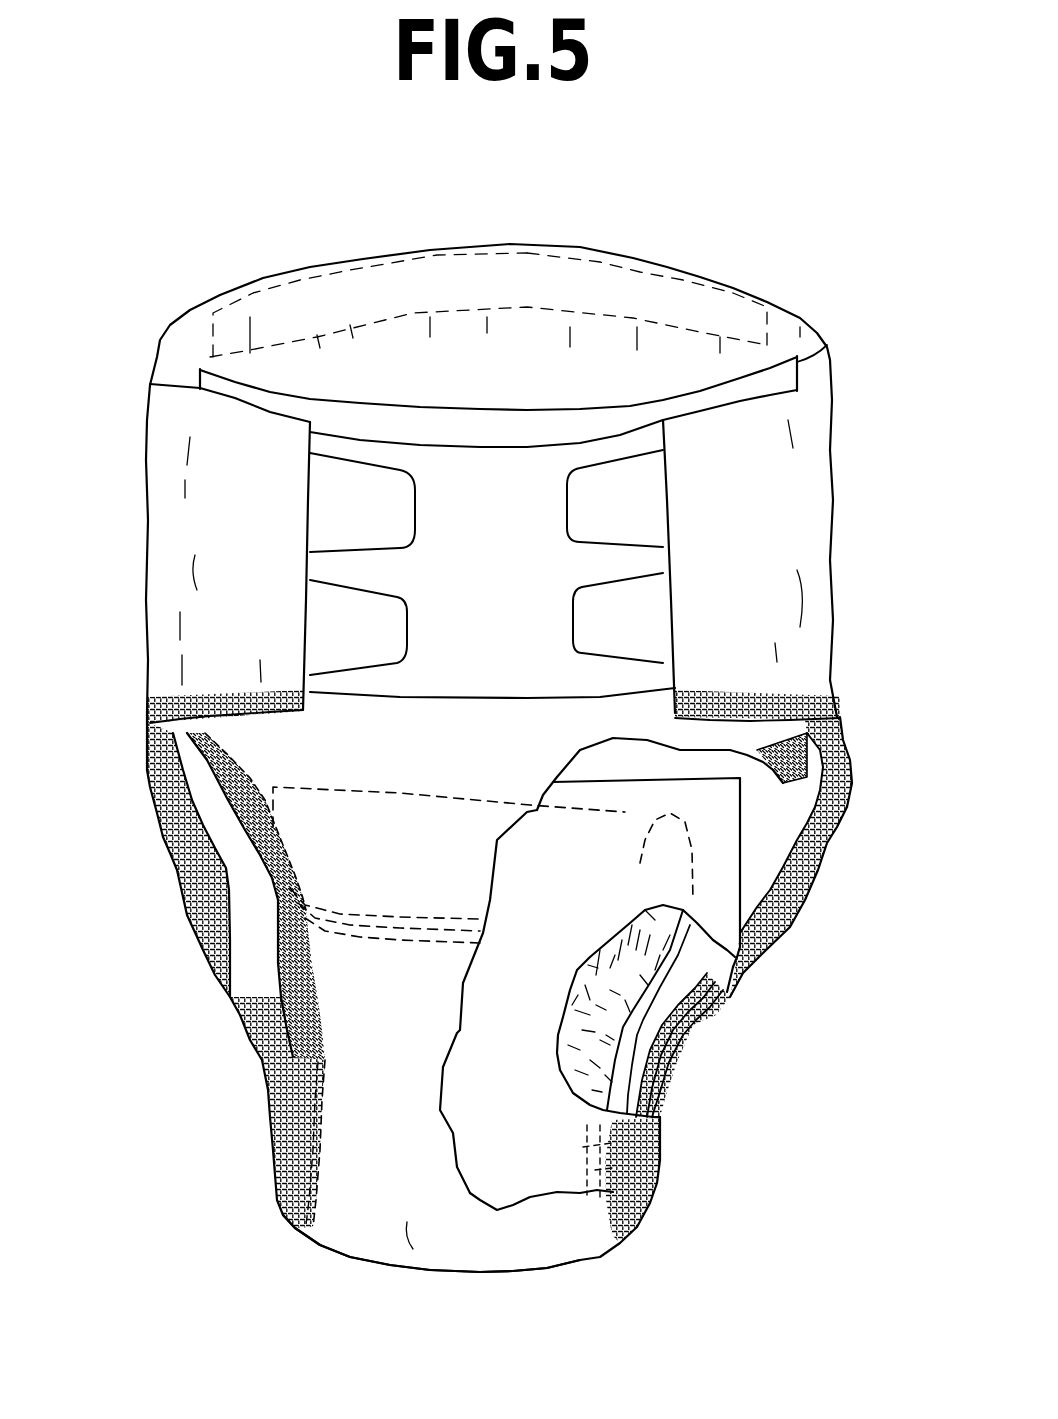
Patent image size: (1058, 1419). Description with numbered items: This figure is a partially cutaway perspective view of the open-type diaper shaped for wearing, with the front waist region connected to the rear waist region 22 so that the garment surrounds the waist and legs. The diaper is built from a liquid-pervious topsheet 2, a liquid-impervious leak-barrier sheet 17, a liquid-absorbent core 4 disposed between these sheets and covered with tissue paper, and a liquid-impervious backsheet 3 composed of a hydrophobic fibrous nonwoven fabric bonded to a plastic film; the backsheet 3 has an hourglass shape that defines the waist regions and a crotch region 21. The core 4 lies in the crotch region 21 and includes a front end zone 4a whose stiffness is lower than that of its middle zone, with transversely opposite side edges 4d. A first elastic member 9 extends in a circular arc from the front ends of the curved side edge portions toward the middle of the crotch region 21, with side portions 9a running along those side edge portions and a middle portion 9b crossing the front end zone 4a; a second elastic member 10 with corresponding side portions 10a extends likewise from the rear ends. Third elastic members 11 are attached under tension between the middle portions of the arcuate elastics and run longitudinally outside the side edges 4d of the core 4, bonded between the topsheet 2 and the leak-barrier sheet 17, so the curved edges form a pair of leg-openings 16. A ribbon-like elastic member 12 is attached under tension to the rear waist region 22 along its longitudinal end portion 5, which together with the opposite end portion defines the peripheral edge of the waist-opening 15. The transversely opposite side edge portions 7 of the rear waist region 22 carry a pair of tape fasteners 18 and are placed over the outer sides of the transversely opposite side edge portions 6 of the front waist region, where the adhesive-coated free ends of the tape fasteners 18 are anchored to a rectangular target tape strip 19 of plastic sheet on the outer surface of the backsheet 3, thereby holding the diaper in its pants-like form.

The liquid-pervious topsheet 2 is at (611, 965).
The liquid-impervious backsheet 3 is at (383, 1207).
The liquid-absorbent core 4 is at (573, 977).
The front end zone 4a is at (667, 817).
The transversely opposite side edges 4d is at (660, 1153).
The longitudinally opposite end portions 5 is at (458, 257).
The transversely opposite side edge portions of the front waist region 6 is at (827, 345).
The transversely opposite side edge portions of the rear waist region 7 is at (207, 610).
The first elastic member 9 is at (313, 877).
The side portions of the first elastic member 9a is at (243, 768).
The middle portion of the first elastic member 9b is at (425, 913).
The second elastic member 10 is at (240, 690).
The side portions of the second elastic member 10a is at (843, 800).
The third elastic members 11 is at (260, 1117).
The ribbon-like elastic member associated with the waist-opening 12 is at (537, 283).
The waist-opening 15 is at (380, 337).
The leg-openings 16 is at (257, 957).
The liquid-impervious leak-barrier sheet 17 is at (547, 1163).
The tape fasteners 18 is at (420, 555).
The rectangular target tape strip 19 is at (447, 665).
The crotch region 21 is at (472, 1253).
The rear waist region 22 is at (623, 333).